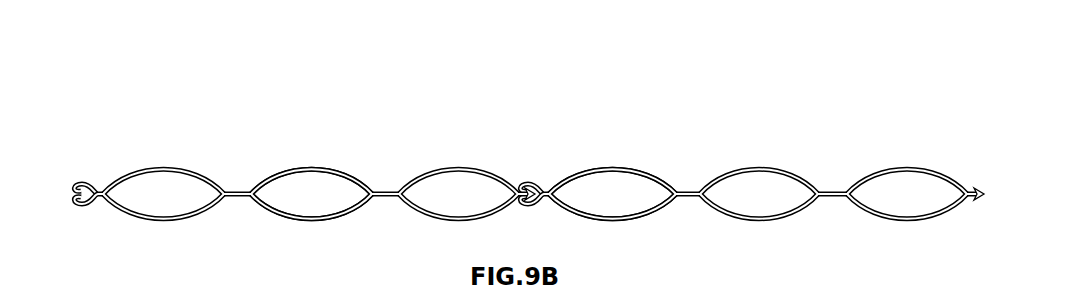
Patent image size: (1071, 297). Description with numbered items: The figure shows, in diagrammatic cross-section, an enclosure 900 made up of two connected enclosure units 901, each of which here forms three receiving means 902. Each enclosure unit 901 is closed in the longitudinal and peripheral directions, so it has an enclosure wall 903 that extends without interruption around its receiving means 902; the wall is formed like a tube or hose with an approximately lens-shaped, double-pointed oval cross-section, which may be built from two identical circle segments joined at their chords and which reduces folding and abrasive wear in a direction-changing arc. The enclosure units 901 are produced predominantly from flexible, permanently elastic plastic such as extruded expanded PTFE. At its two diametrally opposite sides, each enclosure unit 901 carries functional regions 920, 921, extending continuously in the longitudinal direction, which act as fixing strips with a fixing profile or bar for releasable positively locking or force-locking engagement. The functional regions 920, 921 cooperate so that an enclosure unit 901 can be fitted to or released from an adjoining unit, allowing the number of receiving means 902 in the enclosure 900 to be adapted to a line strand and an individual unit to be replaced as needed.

The enclosure 900 is at (730, 84).
The enclosure unit 901 is at (239, 186).
The receiving means 902 is at (535, 194).
The enclosure wall 903 is at (307, 170).
The functional region 920 is at (89, 183).
The functional region 921 is at (520, 184).